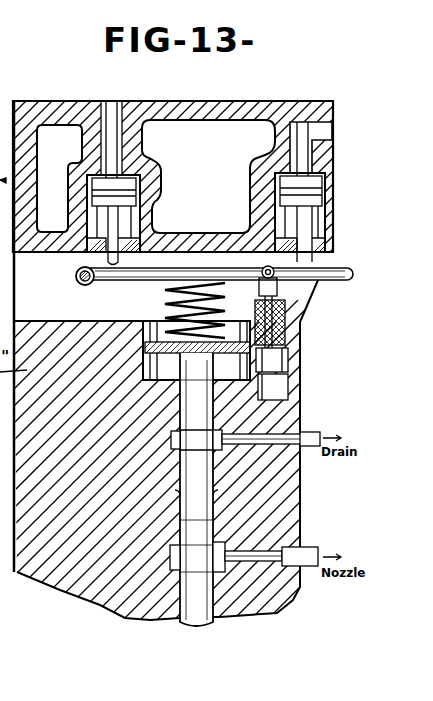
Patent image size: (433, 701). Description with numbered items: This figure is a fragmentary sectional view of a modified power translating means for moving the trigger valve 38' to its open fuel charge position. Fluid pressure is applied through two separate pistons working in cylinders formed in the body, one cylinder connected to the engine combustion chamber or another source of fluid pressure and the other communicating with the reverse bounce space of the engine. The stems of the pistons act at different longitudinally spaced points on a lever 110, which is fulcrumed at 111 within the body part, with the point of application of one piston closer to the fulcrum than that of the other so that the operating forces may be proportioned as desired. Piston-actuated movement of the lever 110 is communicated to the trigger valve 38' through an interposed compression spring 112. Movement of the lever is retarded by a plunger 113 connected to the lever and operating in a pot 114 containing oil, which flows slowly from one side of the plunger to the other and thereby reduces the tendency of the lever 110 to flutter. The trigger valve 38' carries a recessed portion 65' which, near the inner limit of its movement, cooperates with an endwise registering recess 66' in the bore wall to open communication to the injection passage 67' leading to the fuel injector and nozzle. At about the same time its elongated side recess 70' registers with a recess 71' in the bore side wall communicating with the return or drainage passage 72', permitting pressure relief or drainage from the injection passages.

The trigger valve 38' is at (196, 344).
The recessed portion 65' is at (197, 557).
The recess 66' is at (269, 575).
The injection passage 67' is at (253, 538).
The elongated side recess 70' is at (196, 445).
The recess 71' is at (145, 462).
The return or drainage passage 72' is at (271, 455).
The lever 110 is at (148, 272).
The fulcrum 111 is at (76, 276).
The compression spring 112 is at (262, 300).
The plunger 113 is at (288, 353).
The pot 114 is at (288, 387).